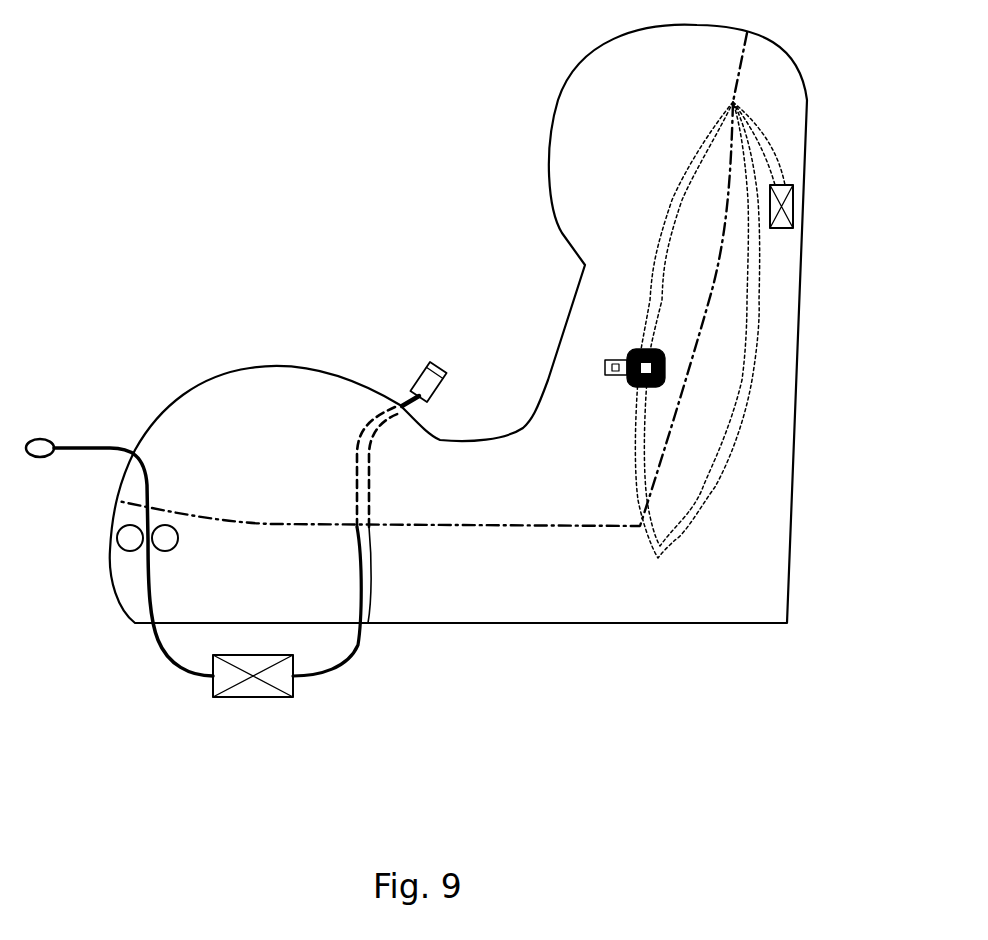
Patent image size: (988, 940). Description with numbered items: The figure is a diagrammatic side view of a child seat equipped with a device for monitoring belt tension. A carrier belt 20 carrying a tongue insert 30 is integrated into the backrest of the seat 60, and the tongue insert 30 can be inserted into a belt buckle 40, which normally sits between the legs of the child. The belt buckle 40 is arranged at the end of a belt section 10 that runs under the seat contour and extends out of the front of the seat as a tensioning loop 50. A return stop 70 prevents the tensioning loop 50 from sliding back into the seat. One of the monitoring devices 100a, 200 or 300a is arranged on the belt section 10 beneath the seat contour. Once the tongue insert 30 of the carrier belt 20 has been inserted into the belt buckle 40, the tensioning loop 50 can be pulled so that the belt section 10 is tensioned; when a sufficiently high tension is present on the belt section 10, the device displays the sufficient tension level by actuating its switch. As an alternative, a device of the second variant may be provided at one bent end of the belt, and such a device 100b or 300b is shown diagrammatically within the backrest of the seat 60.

The belt section 10 is at (357, 645).
The carrier belt 20 is at (703, 485).
The tongue insert 30 is at (627, 352).
The belt buckle 40 is at (423, 363).
The tensioning loop 50 is at (68, 446).
The seat 60 is at (718, 595).
The return stop 70 is at (128, 535).
The device for monitoring belt tension 100a is at (334, 728).
The device for monitoring belt tension 200 is at (334, 728).
The device for monitoring belt tension 300a is at (255, 697).
The device for monitoring belt tension 100b is at (822, 278).
The device for monitoring belt tension 300b is at (780, 228).